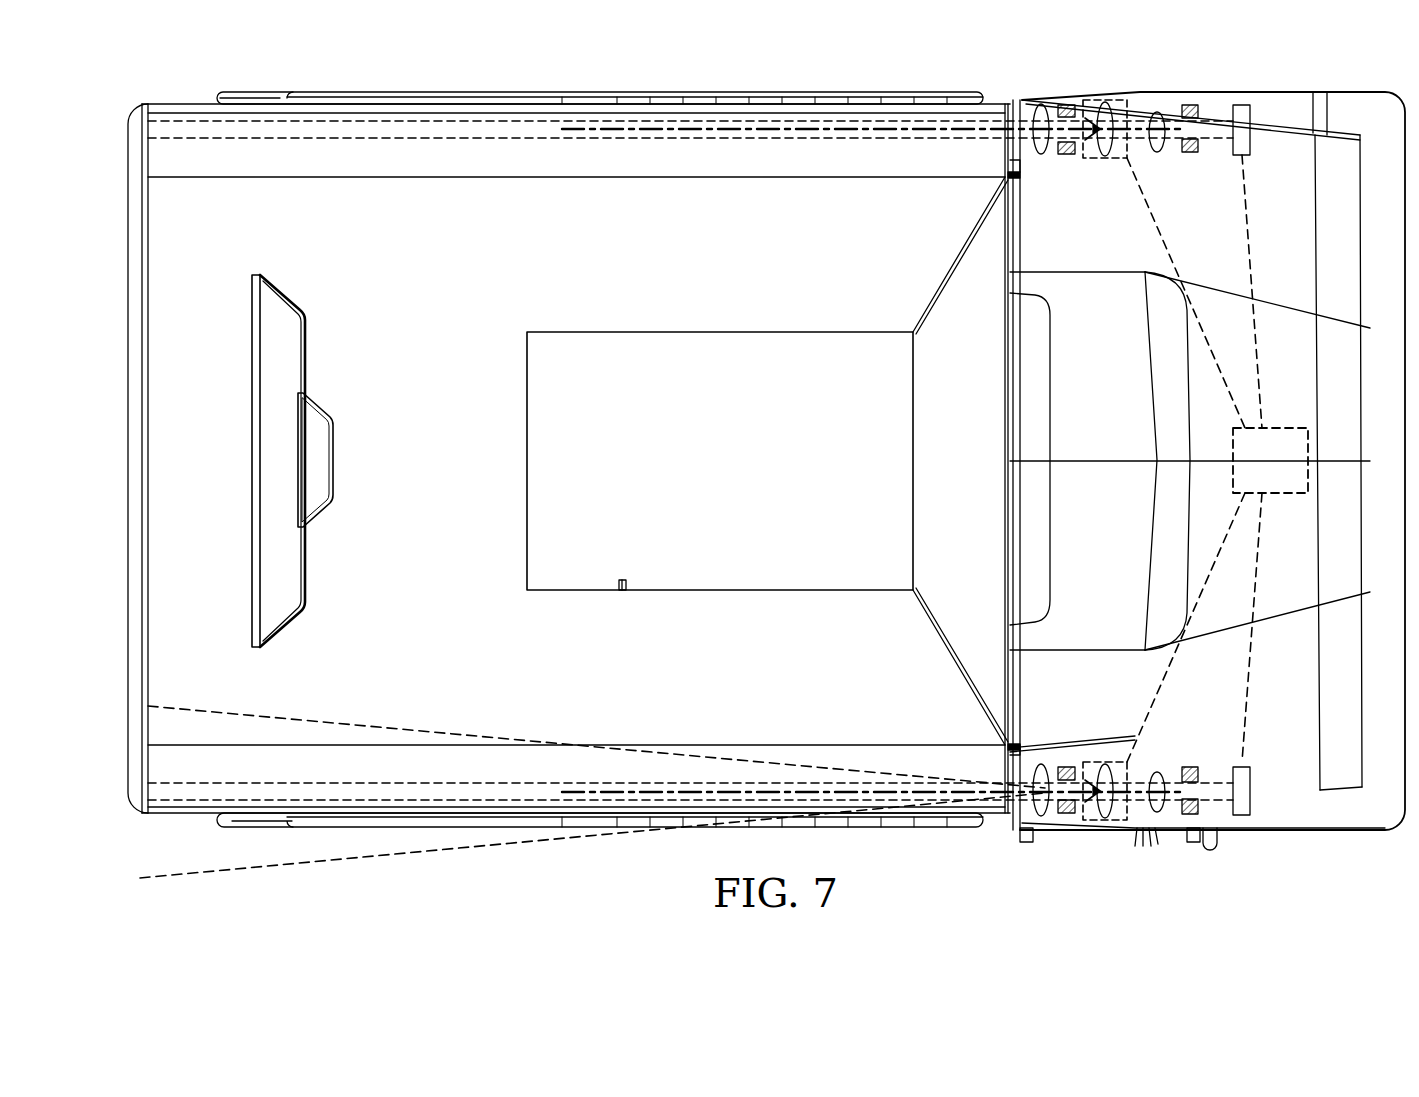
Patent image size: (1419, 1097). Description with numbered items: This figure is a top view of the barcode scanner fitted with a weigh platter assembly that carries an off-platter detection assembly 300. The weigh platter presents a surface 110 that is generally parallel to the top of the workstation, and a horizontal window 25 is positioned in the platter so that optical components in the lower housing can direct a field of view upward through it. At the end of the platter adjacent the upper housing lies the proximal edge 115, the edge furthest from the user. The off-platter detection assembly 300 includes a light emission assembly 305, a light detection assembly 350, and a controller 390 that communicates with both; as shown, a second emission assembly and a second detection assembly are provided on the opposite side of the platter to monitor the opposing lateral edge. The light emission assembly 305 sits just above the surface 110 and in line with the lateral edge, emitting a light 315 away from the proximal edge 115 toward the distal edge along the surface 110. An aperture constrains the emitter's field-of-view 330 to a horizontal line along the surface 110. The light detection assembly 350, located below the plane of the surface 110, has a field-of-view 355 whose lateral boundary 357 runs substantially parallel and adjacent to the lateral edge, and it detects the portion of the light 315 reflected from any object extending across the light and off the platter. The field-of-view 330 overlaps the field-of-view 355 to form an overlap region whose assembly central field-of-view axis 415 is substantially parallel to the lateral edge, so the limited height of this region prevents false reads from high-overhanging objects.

The surface 110 is at (431, 247).
The horizontal window 25 is at (731, 360).
The proximal edge 115 is at (1003, 167).
The off-platter detection assembly 300 is at (1099, 660).
The light emission assembly 305 is at (1069, 845).
The light 315 is at (418, 760).
The field-of-view 330 is at (795, 762).
The light detection assembly 350 is at (1211, 763).
The field-of-view 355 is at (292, 783).
The lateral boundary 357 is at (560, 772).
The controller 390 is at (1290, 428).
The assembly central field-of-view axis 415 is at (678, 790).